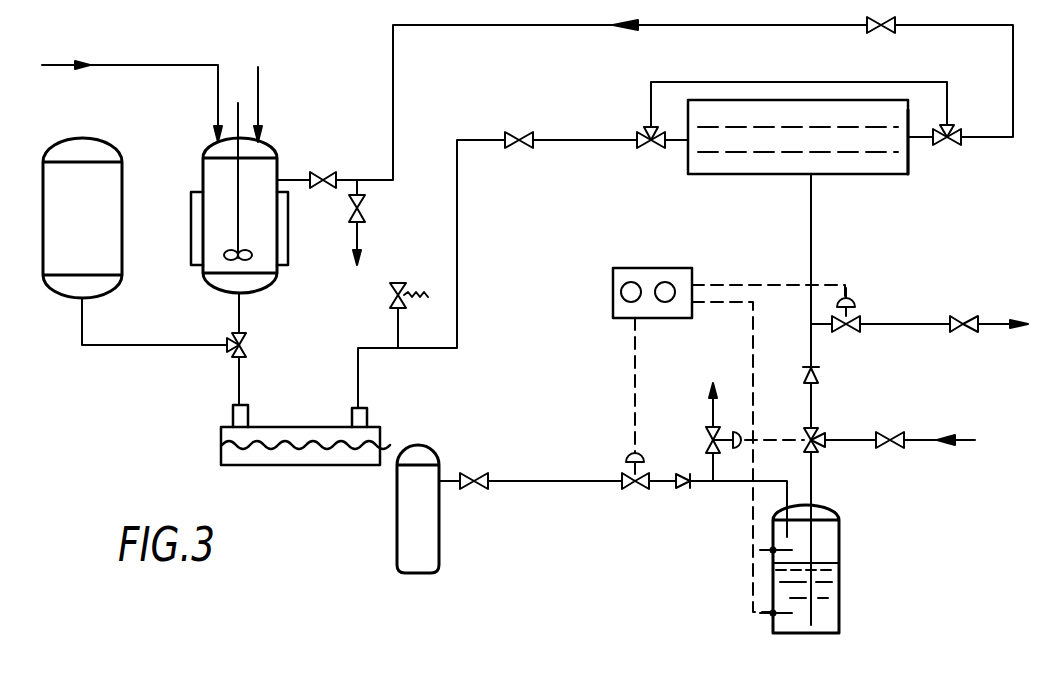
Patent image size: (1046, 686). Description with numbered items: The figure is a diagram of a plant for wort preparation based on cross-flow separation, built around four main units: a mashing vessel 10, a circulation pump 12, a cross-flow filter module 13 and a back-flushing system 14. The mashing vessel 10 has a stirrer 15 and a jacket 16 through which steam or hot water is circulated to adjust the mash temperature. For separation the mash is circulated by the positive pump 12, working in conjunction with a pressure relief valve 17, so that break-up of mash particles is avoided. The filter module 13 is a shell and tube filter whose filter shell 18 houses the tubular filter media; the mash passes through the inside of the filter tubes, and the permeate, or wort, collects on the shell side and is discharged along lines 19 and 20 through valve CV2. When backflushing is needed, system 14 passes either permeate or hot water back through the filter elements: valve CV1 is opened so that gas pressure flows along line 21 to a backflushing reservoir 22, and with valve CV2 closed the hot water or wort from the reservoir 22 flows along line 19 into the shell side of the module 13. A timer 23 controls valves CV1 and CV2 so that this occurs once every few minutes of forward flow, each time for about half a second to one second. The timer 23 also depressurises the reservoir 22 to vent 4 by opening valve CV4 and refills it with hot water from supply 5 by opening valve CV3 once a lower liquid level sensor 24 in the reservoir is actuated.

The vent 4 is at (715, 415).
The supply 5 is at (920, 438).
The mashing vessel 10 is at (258, 292).
The circulation pump 12 is at (303, 427).
The cross-flow filter module 13 is at (722, 187).
The back-flushing system 14 is at (800, 255).
The stirrer 15 is at (239, 214).
The jacket 16 is at (191, 217).
The pressure relief valve 17 is at (390, 299).
The filter shell 18 is at (857, 176).
The line 19 is at (812, 276).
The line 20 is at (820, 323).
The line 21 is at (659, 489).
The backflushing reservoir 22 is at (840, 548).
The timer 23 is at (613, 301).
The lower liquid level sensor 24 is at (773, 613).
The valve CV1 is at (630, 478).
The valve CV2 is at (853, 333).
The valve CV3 is at (822, 446).
The valve CV4 is at (708, 432).